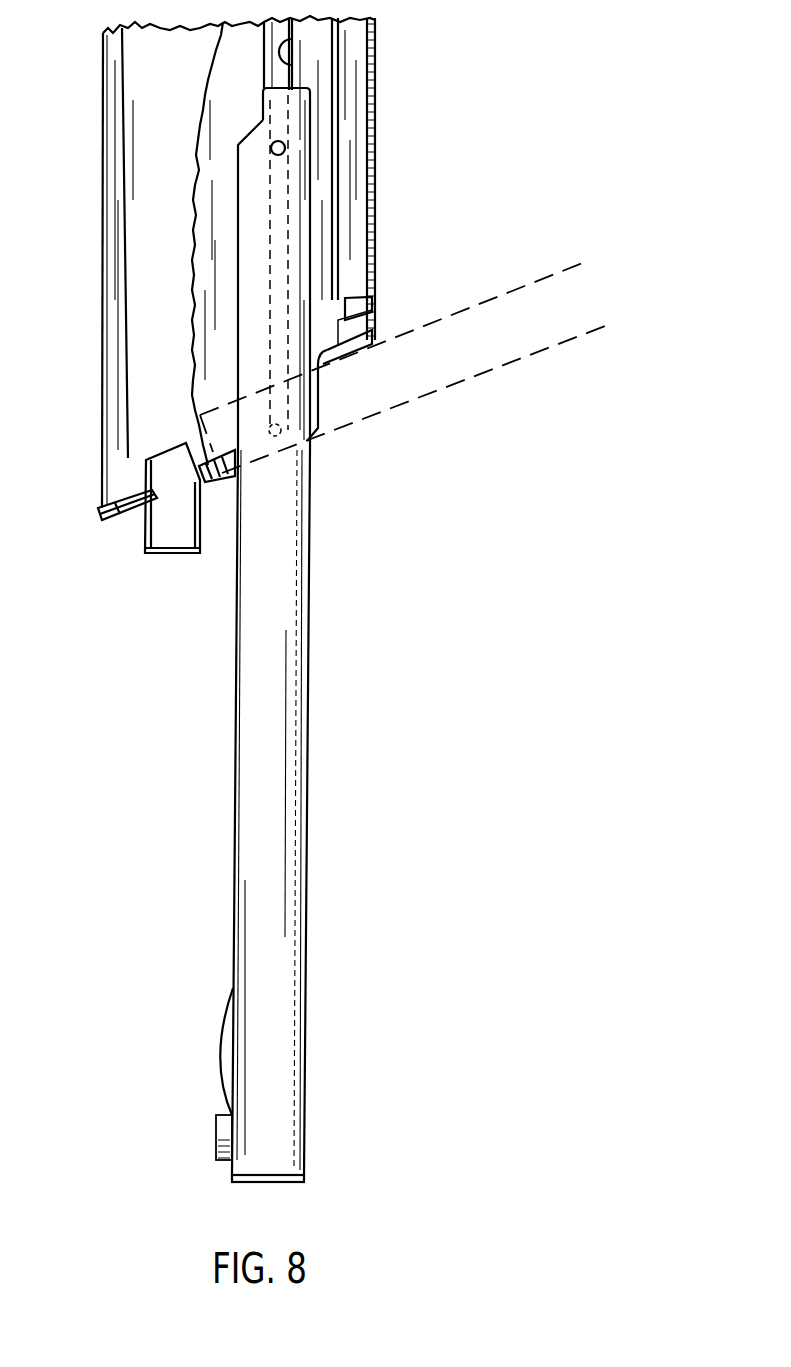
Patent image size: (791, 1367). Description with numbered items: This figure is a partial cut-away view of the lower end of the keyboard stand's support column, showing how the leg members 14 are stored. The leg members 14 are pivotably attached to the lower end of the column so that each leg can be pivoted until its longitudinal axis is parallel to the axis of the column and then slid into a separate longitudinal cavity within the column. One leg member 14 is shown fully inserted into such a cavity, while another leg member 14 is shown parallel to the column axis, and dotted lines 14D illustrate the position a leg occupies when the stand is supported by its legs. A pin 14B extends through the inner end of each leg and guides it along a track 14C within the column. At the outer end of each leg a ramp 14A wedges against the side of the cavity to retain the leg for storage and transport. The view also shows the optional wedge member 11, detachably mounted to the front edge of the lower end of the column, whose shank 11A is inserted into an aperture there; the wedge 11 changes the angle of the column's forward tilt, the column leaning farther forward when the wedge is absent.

The wedge member 11 is at (370, 337).
The shank 11A is at (367, 310).
The leg member 14 is at (143, 540).
The ramp 14A is at (218, 1050).
The pin 14B is at (288, 149).
The track 14C is at (285, 63).
The dotted lines 14D is at (503, 373).